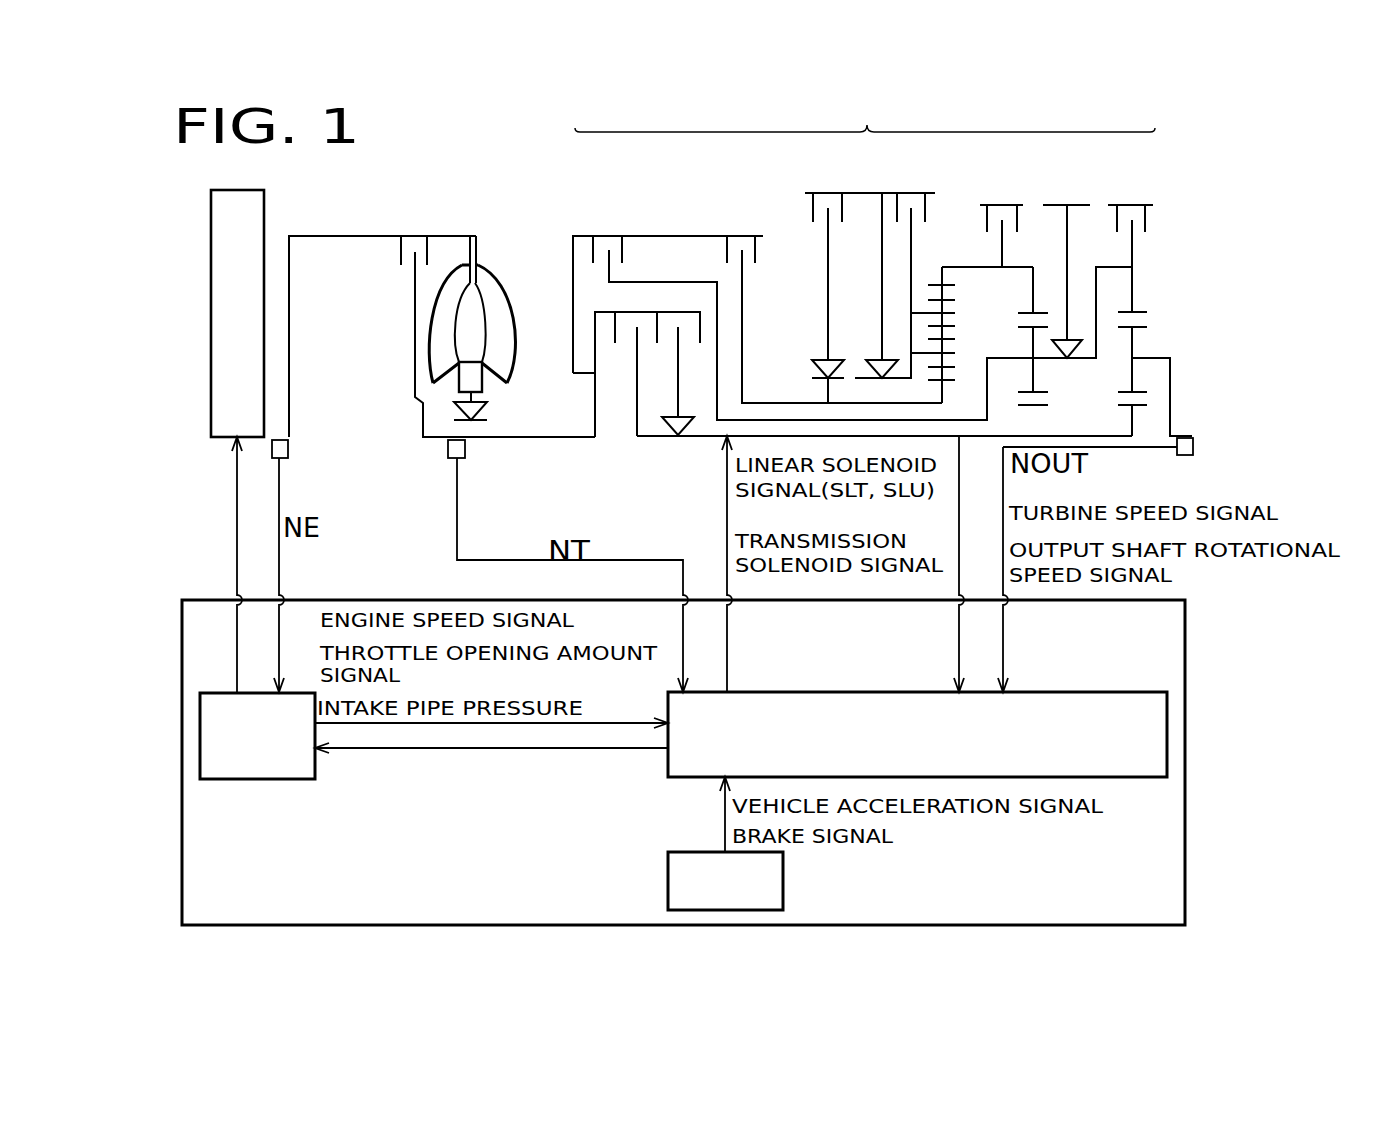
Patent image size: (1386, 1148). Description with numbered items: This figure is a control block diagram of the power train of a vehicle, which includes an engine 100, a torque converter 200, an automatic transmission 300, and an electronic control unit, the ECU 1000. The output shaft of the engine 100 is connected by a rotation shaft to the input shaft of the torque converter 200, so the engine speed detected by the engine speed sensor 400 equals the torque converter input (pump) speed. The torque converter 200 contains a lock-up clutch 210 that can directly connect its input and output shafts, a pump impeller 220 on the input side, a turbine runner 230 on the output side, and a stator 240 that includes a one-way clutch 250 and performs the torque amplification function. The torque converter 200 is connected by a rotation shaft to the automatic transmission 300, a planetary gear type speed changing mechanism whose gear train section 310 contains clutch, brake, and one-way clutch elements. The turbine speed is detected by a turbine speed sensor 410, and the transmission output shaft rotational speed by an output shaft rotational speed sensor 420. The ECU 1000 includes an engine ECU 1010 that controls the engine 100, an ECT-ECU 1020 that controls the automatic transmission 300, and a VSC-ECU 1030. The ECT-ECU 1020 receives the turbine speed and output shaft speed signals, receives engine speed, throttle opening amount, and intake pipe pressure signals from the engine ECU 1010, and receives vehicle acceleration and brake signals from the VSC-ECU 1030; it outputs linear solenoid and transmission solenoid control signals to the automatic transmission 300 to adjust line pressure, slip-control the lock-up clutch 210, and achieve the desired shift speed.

The engine 100 is at (210, 298).
The torque converter 200 is at (452, 311).
The lock-up clutch 210 is at (401, 252).
The pump impeller 220 is at (510, 357).
The turbine runner 230 is at (462, 265).
The stator 240 is at (455, 380).
The one-way clutch 250 is at (485, 415).
The automatic transmission 300 is at (882, 283).
The planetary gear unit 310 is at (673, 317).
The engine speed sensor 400 is at (290, 448).
The turbine speed sensor 410 is at (465, 458).
The output shaft rotational speed sensor 420 is at (1193, 447).
The electronic control unit (ECU) 1000 is at (1185, 832).
The engine ECU 1010 is at (258, 779).
The ECT-ECU 1020 is at (1167, 735).
The VSC-ECU 1030 is at (783, 880).